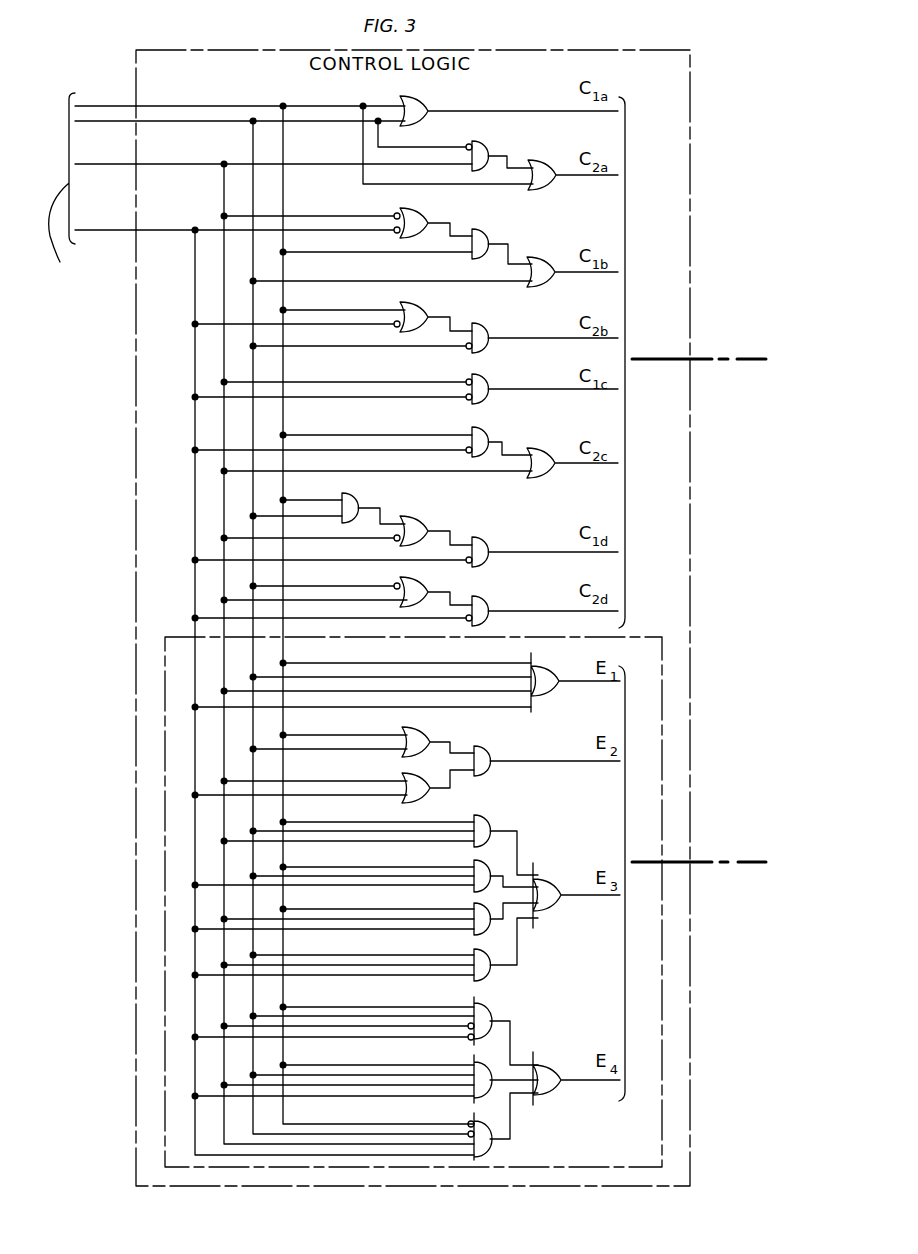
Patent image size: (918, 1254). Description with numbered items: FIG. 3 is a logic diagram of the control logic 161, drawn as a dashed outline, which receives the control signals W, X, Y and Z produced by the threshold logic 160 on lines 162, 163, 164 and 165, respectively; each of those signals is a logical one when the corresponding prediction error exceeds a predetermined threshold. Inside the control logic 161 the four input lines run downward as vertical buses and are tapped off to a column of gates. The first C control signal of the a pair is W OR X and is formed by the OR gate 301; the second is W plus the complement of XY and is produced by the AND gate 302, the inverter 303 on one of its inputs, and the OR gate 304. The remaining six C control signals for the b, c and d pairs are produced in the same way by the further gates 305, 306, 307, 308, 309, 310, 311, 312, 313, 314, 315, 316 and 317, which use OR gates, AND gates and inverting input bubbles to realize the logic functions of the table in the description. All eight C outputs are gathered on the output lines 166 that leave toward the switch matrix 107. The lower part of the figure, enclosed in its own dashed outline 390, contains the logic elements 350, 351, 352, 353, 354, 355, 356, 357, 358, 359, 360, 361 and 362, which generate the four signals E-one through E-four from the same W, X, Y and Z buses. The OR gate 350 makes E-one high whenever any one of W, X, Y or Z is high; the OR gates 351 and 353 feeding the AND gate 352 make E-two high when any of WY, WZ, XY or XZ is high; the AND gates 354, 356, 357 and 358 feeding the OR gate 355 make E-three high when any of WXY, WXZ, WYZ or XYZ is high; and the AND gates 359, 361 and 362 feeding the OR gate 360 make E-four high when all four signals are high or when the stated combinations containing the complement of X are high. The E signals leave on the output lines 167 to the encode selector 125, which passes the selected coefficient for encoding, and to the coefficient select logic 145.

The control logic 161 is at (690, 153).
The encode logic section 390 is at (648, 636).
The threshold logic circuit 160 is at (72, 221).
The line 162 is at (88, 103).
The line 163 is at (88, 123).
The line 164 is at (88, 167).
The line 165 is at (88, 232).
The output lines to switch matrix 166 is at (750, 356).
The output lines to encode selector and coefficient select logic 167 is at (752, 860).
The switch matrix 107 is at (750, 402).
The selector 125 is at (750, 909).
The coefficient select logic 145 is at (750, 999).
The gate 301 is at (412, 97).
The AND gate 302 is at (484, 142).
The inverter 303 is at (466, 145).
The OR gate 304 is at (550, 185).
The NOR gate 305 is at (418, 209).
The AND gate 306 is at (485, 232).
The OR gate 307 is at (535, 255).
The OR gate 308 is at (414, 304).
The AND gate 309 is at (482, 326).
The AND gate 310 is at (482, 379).
The AND gate 311 is at (484, 428).
The OR gate 312 is at (535, 449).
The AND gate 313 is at (355, 494).
The OR gate 314 is at (414, 516).
The AND gate 315 is at (482, 537).
The OR gate 316 is at (418, 582).
The AND gate 317 is at (482, 596).
The logic element 350 is at (546, 667).
The logic element 351 is at (428, 731).
The logic element 352 is at (490, 748).
The logic element 353 is at (428, 797).
The logic element 354 is at (490, 816).
The logic element 355 is at (548, 880).
The logic element 356 is at (486, 863).
The logic element 357 is at (474, 903).
The logic element 358 is at (488, 976).
The logic element 359 is at (488, 1006).
The logic element 360 is at (553, 1066).
The logic element 361 is at (486, 1064).
The logic element 362 is at (492, 1151).